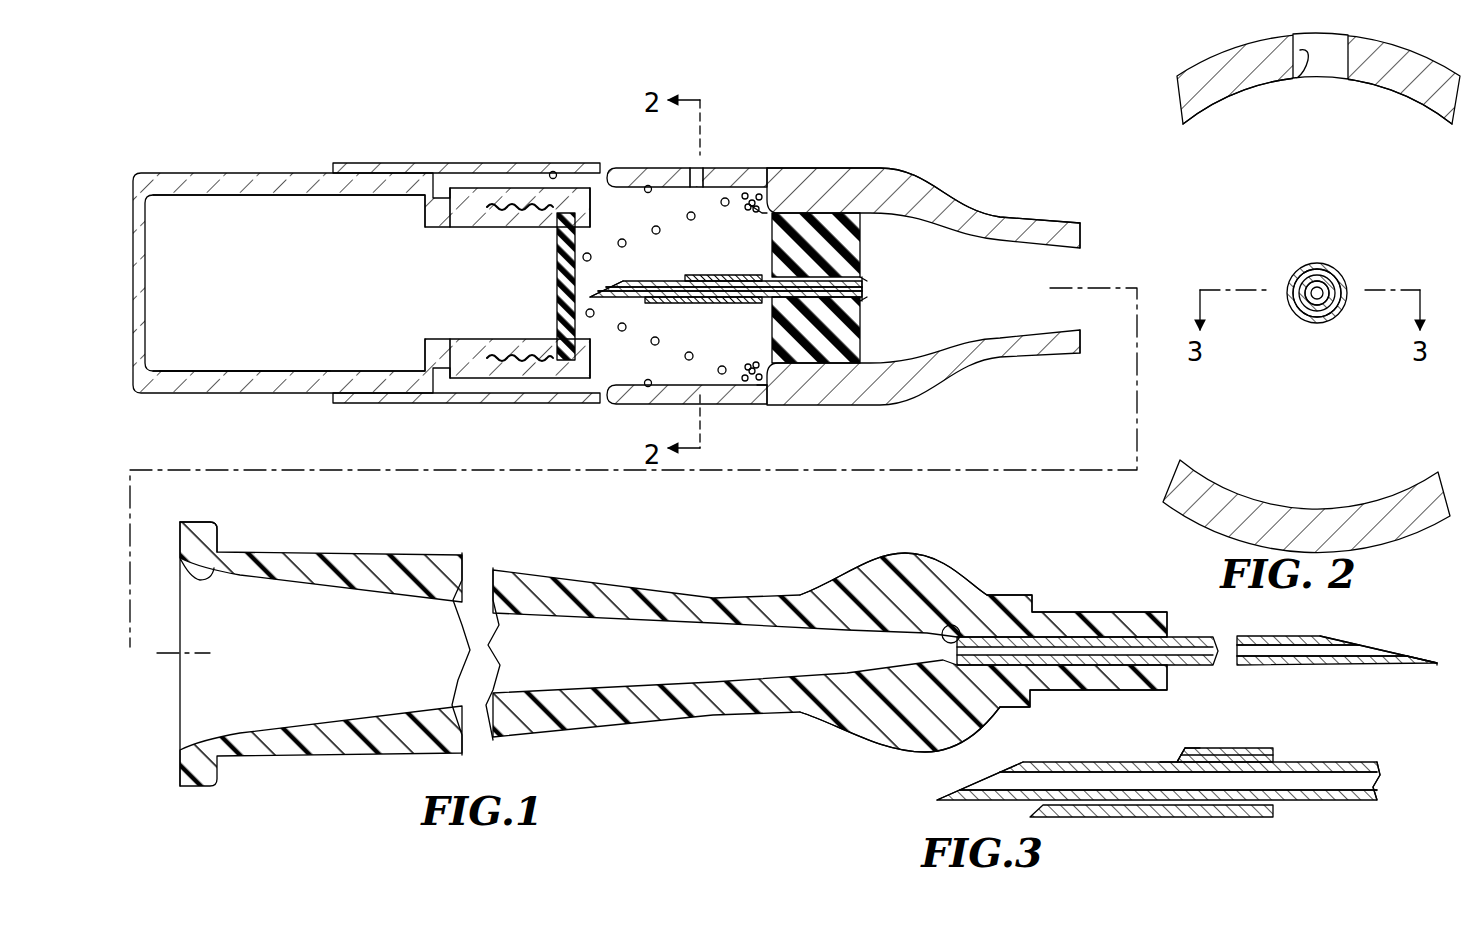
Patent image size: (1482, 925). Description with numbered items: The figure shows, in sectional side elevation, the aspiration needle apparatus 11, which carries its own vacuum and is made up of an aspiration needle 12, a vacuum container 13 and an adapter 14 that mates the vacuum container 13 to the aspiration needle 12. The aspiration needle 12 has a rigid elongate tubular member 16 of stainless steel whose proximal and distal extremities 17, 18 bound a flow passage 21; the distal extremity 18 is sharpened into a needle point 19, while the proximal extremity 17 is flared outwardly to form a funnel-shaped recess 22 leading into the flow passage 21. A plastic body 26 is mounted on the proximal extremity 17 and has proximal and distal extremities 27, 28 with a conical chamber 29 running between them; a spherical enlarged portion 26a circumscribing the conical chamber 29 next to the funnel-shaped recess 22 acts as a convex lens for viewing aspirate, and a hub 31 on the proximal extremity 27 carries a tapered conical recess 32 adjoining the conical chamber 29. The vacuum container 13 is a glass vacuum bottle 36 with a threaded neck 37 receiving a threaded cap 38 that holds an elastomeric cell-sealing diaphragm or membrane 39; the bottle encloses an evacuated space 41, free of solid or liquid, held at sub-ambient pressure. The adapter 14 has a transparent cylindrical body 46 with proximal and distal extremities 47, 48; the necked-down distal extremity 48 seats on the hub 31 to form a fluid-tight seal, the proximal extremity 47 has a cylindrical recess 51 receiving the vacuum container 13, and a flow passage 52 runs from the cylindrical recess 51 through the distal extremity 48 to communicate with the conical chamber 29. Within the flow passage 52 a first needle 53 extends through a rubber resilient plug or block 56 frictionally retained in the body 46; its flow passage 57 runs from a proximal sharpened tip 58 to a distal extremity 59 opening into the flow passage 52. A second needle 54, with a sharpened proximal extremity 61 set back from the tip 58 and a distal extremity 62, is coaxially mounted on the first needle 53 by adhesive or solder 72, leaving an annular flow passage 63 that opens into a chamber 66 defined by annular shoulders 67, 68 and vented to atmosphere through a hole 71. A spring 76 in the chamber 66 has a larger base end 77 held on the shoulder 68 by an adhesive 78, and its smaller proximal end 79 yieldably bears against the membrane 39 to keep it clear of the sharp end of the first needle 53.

In FIG. 1, the aspiration needle apparatus 11 is at (882, 86).
In FIG. 1, the aspiration needle 12 is at (727, 540).
In FIG. 1, the vacuum container 13 is at (213, 168).
In FIG. 1, the adapter 14 is at (932, 166).
In FIG. 2, the adapter 14 is at (1212, 40).
In FIG. 1, the rigid elongate tubular member 16 is at (1264, 628).
In FIG. 1, the proximal extremity 17 is at (1199, 638).
In FIG. 1, the distal extremity 18 is at (1359, 665).
In FIG. 1, the needle point 19 is at (1437, 665).
In FIG. 1, the flow passage 21 is at (1291, 657).
In FIG. 1, the funnel-shaped recess 22 is at (958, 628).
In FIG. 1, the body 26 is at (752, 593).
In FIG. 1, the spherical enlarged portion 26a is at (936, 555).
In FIG. 1, the proximal extremity 27 is at (304, 552).
In FIG. 1, the distal extremity 28 is at (1128, 614).
In FIG. 1, the conical chamber 29 is at (596, 602).
In FIG. 1, the hub 31 is at (219, 533).
In FIG. 1, the tapered conical recess 32 is at (183, 580).
In FIG. 1, the vacuum bottle 36 is at (291, 178).
In FIG. 1, the neck 37 is at (500, 226).
In FIG. 1, the threaded cap 38 is at (511, 195).
In FIG. 1, the cell-sealing diaphragm or membrane 39 is at (557, 310).
In FIG. 1, the evacuated space 41 is at (250, 372).
In FIG. 1, the cylindrical body 46 is at (822, 180).
In FIG. 2, the cylindrical body 46 is at (1263, 76).
In FIG. 1, the proximal extremity 47 is at (389, 163).
In FIG. 1, the distal extremity 48 is at (1066, 230).
In FIG. 1, the cylindrical recess 51 is at (556, 172).
In FIG. 1, the flow passage 52 is at (984, 348).
In FIG. 1, the first needle 53 is at (622, 298).
In FIG. 2, the first needle 53 is at (1297, 270).
In FIG. 3, the first needle 53 is at (1090, 761).
In FIG. 1, the second needle 54 is at (746, 304).
In FIG. 2, the second needle 54 is at (1320, 268).
In FIG. 3, the second needle 54 is at (1160, 807).
In FIG. 1, the resilient plug or block 56 is at (856, 238).
In FIG. 1, the flow passage 57 is at (795, 302).
In FIG. 2, the flow passage 57 is at (1317, 299).
In FIG. 3, the flow passage 57 is at (1302, 779).
In FIG. 1, the proximal sharpened tip 58 is at (640, 284).
In FIG. 3, the proximal sharpened tip 58 is at (980, 790).
In FIG. 1, the distal extremity 59 is at (865, 290).
In FIG. 3, the distal extremity 59 is at (1379, 768).
In FIG. 3, the proximal extremity 61 is at (1186, 749).
In FIG. 3, the distal extremity 62 is at (1263, 750).
In FIG. 2, the annular flow passage 63 is at (1300, 308).
In FIG. 3, the annular flow passage 63 is at (1241, 754).
In FIG. 1, the chamber 66 is at (650, 185).
In FIG. 1, the annular shoulder 67 is at (592, 403).
In FIG. 1, the annular shoulder 68 is at (760, 392).
In FIG. 1, the hole 71 is at (703, 176).
In FIG. 2, the hole 71 is at (1303, 62).
In FIG. 2, the adhesive or solder 72 is at (1345, 288).
In FIG. 3, the adhesive or solder 72 is at (1160, 759).
In FIG. 1, the spring 76 is at (655, 346).
In FIG. 1, the distal or base end 77 is at (756, 210).
In FIG. 1, the adhesive 78 is at (762, 195).
In FIG. 1, the proximal end 79 is at (590, 252).